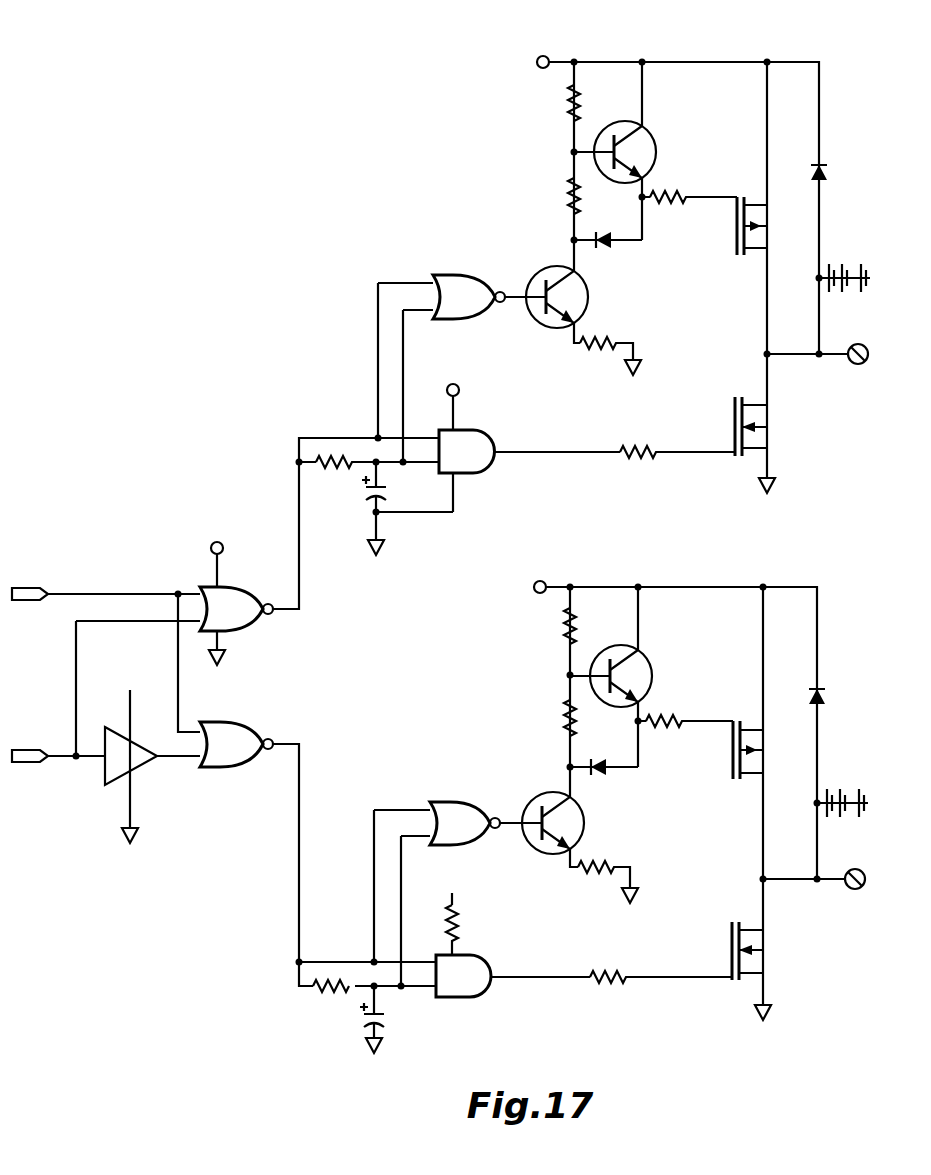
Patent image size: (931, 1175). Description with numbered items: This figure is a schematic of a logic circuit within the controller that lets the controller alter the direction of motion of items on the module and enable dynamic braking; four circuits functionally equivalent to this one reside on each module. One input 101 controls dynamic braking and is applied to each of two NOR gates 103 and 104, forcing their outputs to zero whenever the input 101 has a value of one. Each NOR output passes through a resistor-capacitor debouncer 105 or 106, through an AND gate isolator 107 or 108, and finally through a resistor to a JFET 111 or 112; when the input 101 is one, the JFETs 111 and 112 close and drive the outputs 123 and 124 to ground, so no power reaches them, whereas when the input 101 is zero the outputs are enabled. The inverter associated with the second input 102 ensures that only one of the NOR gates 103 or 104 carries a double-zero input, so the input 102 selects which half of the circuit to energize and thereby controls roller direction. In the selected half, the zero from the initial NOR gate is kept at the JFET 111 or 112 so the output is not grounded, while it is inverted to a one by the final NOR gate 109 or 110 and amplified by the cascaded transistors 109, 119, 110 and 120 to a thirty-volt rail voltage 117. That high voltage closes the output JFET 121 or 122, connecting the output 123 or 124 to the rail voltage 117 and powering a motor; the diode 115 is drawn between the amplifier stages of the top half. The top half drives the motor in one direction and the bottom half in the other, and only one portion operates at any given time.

The input 101 is at (35, 568).
The input 102 is at (32, 780).
The NOR gate 103 is at (287, 622).
The NOR gate 104 is at (285, 730).
The resistor-capacitor debouncer 105 is at (358, 494).
The resistor-capacitor debouncer 106 is at (326, 1002).
The AND gate isolator 107 is at (483, 480).
The AND gate isolator 108 is at (476, 1005).
The final NOR gate 109 is at (532, 262).
The final NOR gate 110 is at (531, 790).
The JFET 111 is at (728, 427).
The JFET 112 is at (726, 950).
The diode 115 is at (635, 250).
The rail voltage 117 is at (624, 58).
The cascaded transistor 119 is at (659, 152).
The cascaded transistor 120 is at (655, 676).
The output JFET 121 is at (733, 221).
The output JFET 122 is at (728, 750).
The output 123 is at (853, 376).
The output 124 is at (855, 899).